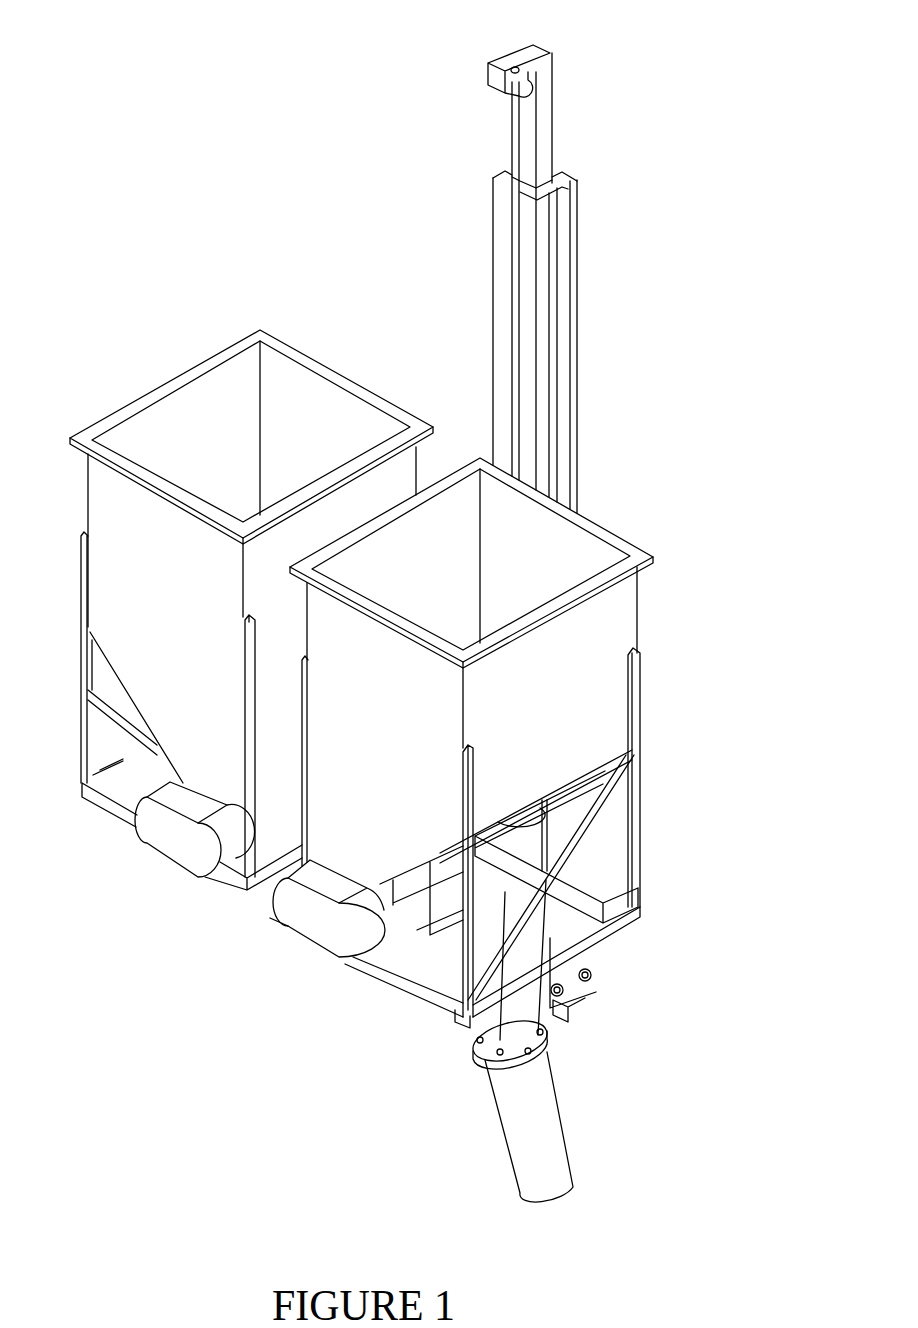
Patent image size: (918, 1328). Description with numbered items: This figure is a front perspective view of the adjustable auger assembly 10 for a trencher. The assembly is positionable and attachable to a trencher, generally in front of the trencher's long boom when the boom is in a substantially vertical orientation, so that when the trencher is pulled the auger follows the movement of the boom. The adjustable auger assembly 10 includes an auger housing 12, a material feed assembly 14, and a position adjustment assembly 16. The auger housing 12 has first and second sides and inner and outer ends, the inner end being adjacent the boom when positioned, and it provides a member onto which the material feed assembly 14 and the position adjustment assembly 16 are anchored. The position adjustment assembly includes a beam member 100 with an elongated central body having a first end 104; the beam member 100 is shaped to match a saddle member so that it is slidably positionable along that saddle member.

The adjustable auger assembly 10 is at (419, 601).
The auger housing 12 is at (461, 1020).
The material feed assembly 14 is at (650, 648).
The position adjustment assembly 16 is at (582, 372).
The beam member 100 is at (578, 210).
The first end 104 is at (523, 48).